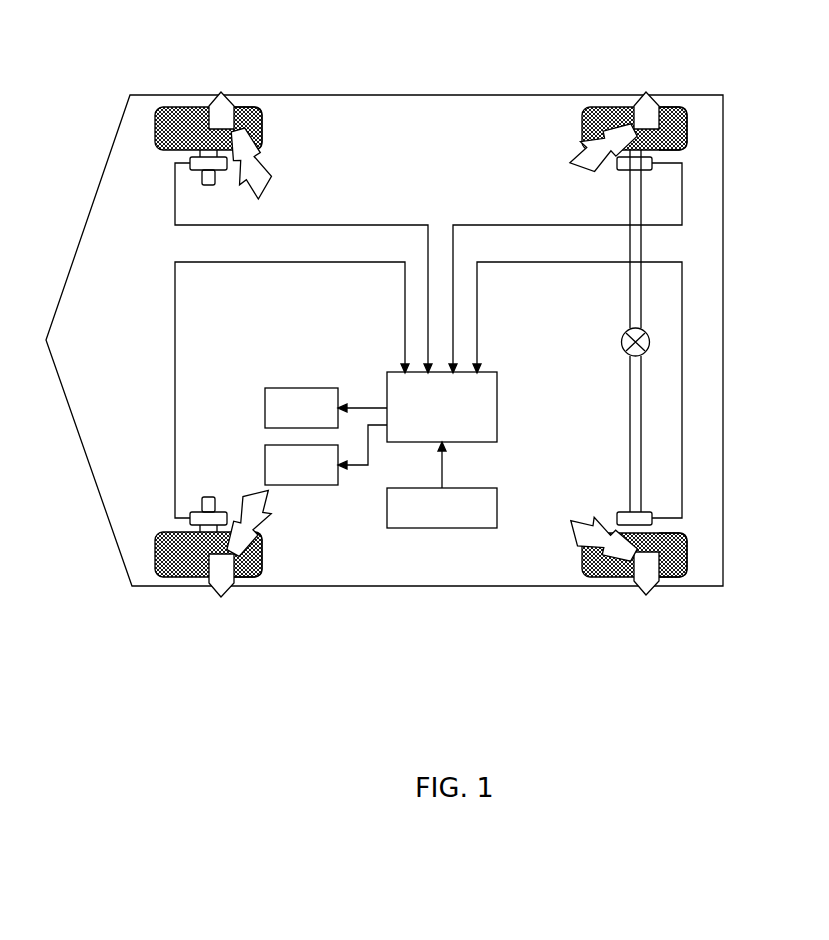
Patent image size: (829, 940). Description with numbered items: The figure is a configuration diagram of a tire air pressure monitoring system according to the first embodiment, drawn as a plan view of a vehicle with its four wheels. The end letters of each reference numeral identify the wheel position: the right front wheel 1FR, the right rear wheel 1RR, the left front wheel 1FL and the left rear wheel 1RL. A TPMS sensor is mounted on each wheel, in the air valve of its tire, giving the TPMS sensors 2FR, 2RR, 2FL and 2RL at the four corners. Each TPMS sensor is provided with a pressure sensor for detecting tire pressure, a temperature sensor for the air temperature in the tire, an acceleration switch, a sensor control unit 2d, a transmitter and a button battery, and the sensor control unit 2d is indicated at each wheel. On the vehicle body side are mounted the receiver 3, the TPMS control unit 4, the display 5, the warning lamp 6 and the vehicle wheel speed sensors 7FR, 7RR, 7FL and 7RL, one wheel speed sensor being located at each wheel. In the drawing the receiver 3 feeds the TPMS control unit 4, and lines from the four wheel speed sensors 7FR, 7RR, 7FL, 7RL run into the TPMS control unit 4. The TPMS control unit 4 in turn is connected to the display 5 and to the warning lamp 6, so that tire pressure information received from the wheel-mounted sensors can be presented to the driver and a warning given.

The right front wheel 1FR is at (168, 107).
The right rear wheel 1RR is at (608, 103).
The left front wheel 1FL is at (165, 578).
The left rear wheel 1RL is at (607, 578).
The TPMS sensor 2FR is at (248, 100).
The TPMS sensor 2RR is at (667, 107).
The TPMS sensor 2FL is at (250, 577).
The TPMS sensor 2RL is at (677, 578).
The sensor control unit 2d is at (221, 90).
The wheel speed sensor 7FR is at (196, 105).
The wheel speed sensor 7RR is at (622, 173).
The wheel speed sensor 7FL is at (193, 578).
The wheel speed sensor 7RL is at (613, 512).
The receiver 3 is at (387, 510).
The TPMS control unit 4 is at (500, 410).
The display 5 is at (290, 388).
The warning lamp 6 is at (265, 465).